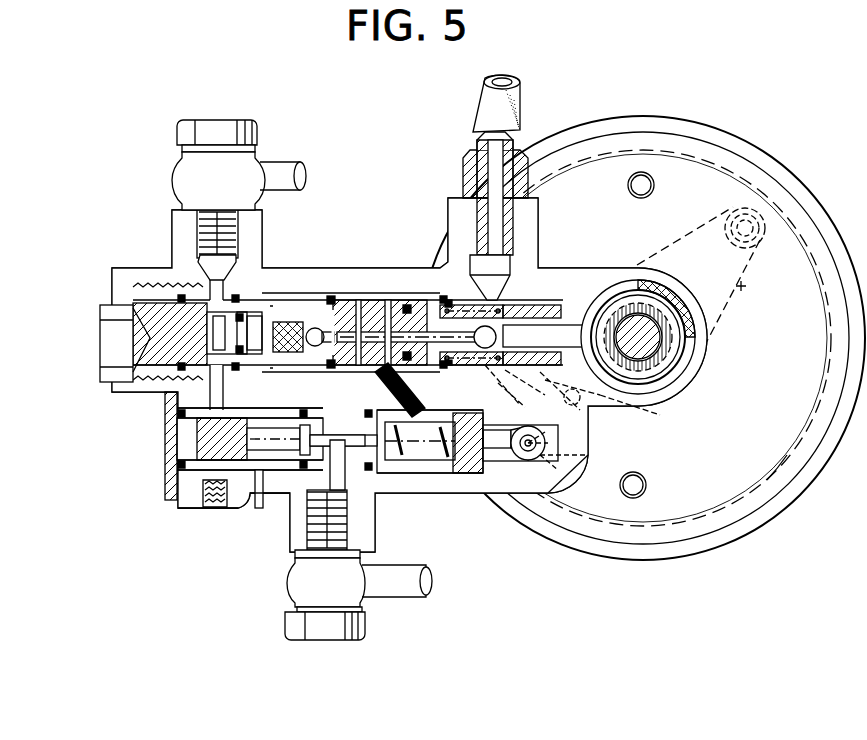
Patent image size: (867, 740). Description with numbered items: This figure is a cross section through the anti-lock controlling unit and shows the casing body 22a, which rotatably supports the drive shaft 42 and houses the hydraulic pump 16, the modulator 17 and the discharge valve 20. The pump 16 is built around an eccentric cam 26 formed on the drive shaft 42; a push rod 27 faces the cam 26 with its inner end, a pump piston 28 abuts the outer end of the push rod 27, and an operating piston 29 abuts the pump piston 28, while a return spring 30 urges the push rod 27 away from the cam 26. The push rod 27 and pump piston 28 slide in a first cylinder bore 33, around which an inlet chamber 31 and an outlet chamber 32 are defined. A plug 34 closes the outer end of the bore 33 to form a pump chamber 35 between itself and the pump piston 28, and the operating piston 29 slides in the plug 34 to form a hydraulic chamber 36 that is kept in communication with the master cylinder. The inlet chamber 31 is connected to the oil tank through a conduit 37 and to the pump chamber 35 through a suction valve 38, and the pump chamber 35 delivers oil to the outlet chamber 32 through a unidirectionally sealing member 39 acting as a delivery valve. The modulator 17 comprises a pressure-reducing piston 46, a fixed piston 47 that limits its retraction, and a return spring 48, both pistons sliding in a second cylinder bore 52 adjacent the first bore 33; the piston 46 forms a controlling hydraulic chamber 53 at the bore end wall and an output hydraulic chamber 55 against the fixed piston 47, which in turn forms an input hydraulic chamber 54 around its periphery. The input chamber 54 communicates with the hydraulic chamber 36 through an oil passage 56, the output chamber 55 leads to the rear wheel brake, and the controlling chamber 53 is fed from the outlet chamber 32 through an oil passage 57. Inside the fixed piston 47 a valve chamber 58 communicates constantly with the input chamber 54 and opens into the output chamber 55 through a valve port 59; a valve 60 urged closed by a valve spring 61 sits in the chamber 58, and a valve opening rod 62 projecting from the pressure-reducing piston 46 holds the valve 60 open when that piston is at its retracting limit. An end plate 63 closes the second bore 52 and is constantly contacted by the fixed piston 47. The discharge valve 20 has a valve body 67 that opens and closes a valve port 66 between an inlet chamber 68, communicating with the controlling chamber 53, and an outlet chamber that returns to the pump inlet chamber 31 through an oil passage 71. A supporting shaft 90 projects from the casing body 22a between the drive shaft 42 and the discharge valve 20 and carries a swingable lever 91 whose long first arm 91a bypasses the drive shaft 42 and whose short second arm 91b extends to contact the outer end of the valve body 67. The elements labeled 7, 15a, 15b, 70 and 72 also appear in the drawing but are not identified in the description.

The pump housing cover disk 7 is at (601, 109).
The inlet fitting 15a is at (343, 186).
The outlet fitting 15b is at (440, 583).
The hydraulic pump 16 is at (425, 320).
The modulator 17 is at (290, 478).
The discharge valve 20 is at (530, 462).
The casing body 22a is at (590, 274).
The eccentric cam 26 is at (660, 345).
The push rod 27 is at (535, 335).
The pump piston 28 is at (392, 300).
The operating piston 29 is at (255, 326).
The return spring 30 is at (488, 344).
The inlet chamber 31 is at (508, 318).
The outlet chamber 32 is at (380, 300).
The first cylinder bore 33 is at (302, 292).
The plug 34 is at (112, 298).
The pump chamber 35 is at (270, 292).
The hydraulic chamber 36 is at (205, 305).
The conduit 37 is at (482, 106).
The suction valve 38 is at (345, 300).
The unidirectionally sealing member 39 is at (348, 296).
The drive shaft 42 is at (665, 330).
The pressure-reducing piston 46 is at (405, 462).
The fixed piston 47 is at (243, 480).
The return spring 48 is at (432, 462).
The second cylinder bore 52 is at (450, 475).
The controlling hydraulic chamber 53 is at (472, 475).
The input hydraulic chamber 54 is at (200, 420).
The output hydraulic chamber 55 is at (342, 465).
The oil passage 56 is at (205, 400).
The oil passage 57 is at (400, 372).
The valve chamber 58 is at (259, 480).
The valve port 59 is at (312, 425).
The valve 60 is at (290, 355).
The valve spring 61 is at (250, 445).
The valve opening rod 62 is at (345, 435).
The end plate 63 is at (170, 460).
The valve port 66 is at (540, 452).
The valve body 67 is at (548, 443).
The inlet chamber 68 is at (560, 460).
The connecting rod 70 is at (492, 462).
The oil passage 71 is at (498, 380).
The rim 72 is at (792, 466).
The supporting shaft 90 is at (564, 395).
The lever 91 is at (755, 242).
The first arm 91a is at (745, 287).
The second arm 91b is at (628, 410).